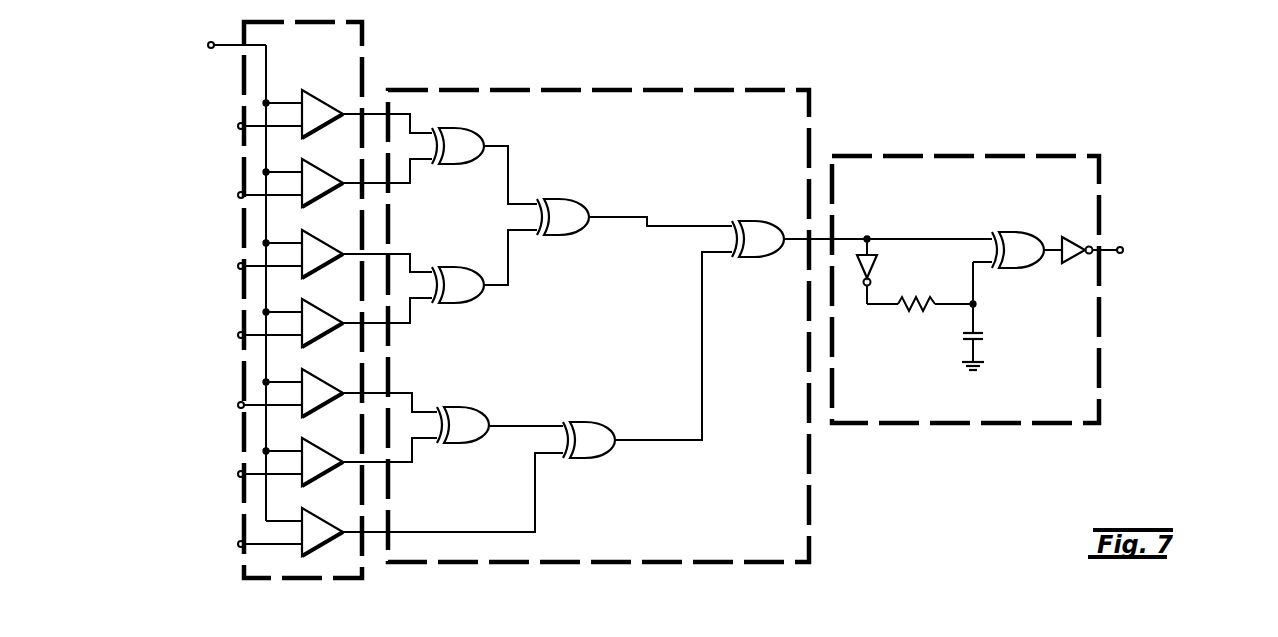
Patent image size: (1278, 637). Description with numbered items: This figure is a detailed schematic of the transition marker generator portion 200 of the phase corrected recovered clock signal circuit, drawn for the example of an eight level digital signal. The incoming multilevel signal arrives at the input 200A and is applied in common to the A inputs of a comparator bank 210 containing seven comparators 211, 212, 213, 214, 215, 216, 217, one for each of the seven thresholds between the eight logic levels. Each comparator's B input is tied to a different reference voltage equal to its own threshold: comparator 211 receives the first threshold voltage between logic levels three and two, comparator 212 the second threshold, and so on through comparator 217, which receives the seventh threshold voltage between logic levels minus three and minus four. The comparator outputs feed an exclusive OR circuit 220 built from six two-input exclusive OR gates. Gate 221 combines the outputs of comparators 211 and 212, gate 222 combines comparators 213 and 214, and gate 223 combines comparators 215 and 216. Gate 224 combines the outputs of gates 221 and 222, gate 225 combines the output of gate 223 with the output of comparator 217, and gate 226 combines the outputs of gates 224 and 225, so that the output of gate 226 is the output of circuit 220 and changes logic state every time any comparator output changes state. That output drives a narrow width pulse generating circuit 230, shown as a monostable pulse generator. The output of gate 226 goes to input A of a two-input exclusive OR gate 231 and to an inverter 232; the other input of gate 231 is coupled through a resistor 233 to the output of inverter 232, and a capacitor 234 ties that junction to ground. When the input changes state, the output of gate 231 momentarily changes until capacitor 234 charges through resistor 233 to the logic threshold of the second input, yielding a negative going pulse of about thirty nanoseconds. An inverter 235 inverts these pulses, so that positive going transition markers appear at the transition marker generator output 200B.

The transition marker generator portion 200 is at (247, 619).
The input 200A is at (211, 48).
The transition marker generator output 200B is at (1167, 263).
The comparator bank 210 is at (326, 59).
The comparator 211 is at (321, 104).
The comparator 212 is at (321, 173).
The comparator 213 is at (321, 244).
The comparator 214 is at (321, 313).
The comparator 215 is at (321, 383).
The comparator 216 is at (321, 452).
The comparator 217 is at (321, 522).
The exclusive OR circuit 220 is at (582, 136).
The exclusive OR gate 221 is at (475, 145).
The exclusive OR gate 222 is at (465, 280).
The exclusive OR gate 223 is at (466, 418).
The exclusive OR gate 224 is at (576, 208).
The exclusive OR gate 225 is at (597, 430).
The exclusive OR gate 226 is at (767, 233).
The narrow width pulse generating circuit 230 is at (923, 202).
The exclusive OR gate 231 is at (1022, 266).
The inverter 232 is at (887, 258).
The resistor 233 is at (918, 306).
The capacitor 234 is at (986, 337).
The inverter 235 is at (1077, 231).